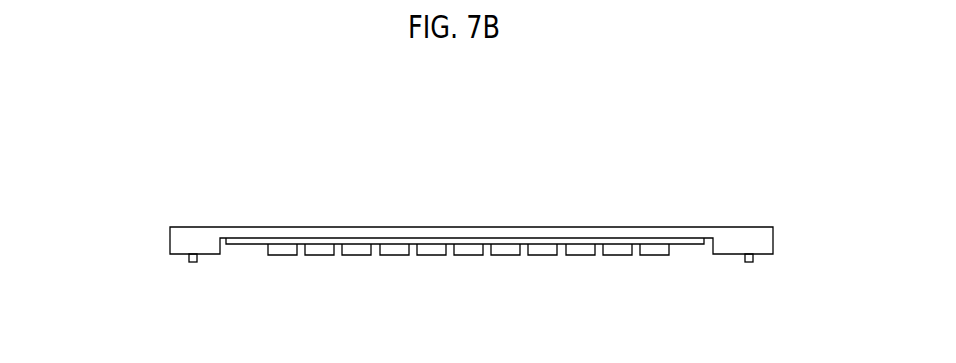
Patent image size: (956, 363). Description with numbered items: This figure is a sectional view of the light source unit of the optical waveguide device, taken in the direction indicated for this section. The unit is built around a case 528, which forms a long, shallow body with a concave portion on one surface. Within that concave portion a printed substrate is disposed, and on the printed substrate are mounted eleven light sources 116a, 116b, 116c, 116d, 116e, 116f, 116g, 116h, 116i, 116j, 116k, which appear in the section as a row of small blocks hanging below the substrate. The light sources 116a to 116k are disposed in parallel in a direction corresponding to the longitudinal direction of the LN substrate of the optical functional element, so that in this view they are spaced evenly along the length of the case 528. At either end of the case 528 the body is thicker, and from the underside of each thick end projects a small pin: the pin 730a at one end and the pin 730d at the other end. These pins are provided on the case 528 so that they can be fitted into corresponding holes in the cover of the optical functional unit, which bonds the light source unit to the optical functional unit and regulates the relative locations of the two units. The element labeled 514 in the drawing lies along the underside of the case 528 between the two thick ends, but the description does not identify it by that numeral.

The case 528 is at (170, 228).
The support plate 514 is at (688, 245).
The light source 116a is at (282, 248).
The light source 116b is at (320, 248).
The light source 116c is at (357, 248).
The light source 116d is at (394, 248).
The light source 116e is at (431, 248).
The light source 116f is at (468, 248).
The light source 116g is at (505, 248).
The light source 116h is at (543, 248).
The light source 116i is at (580, 248).
The light source 116j is at (617, 248).
The light source 116k is at (654, 248).
The pin 730a is at (190, 263).
The pin 730d is at (748, 263).